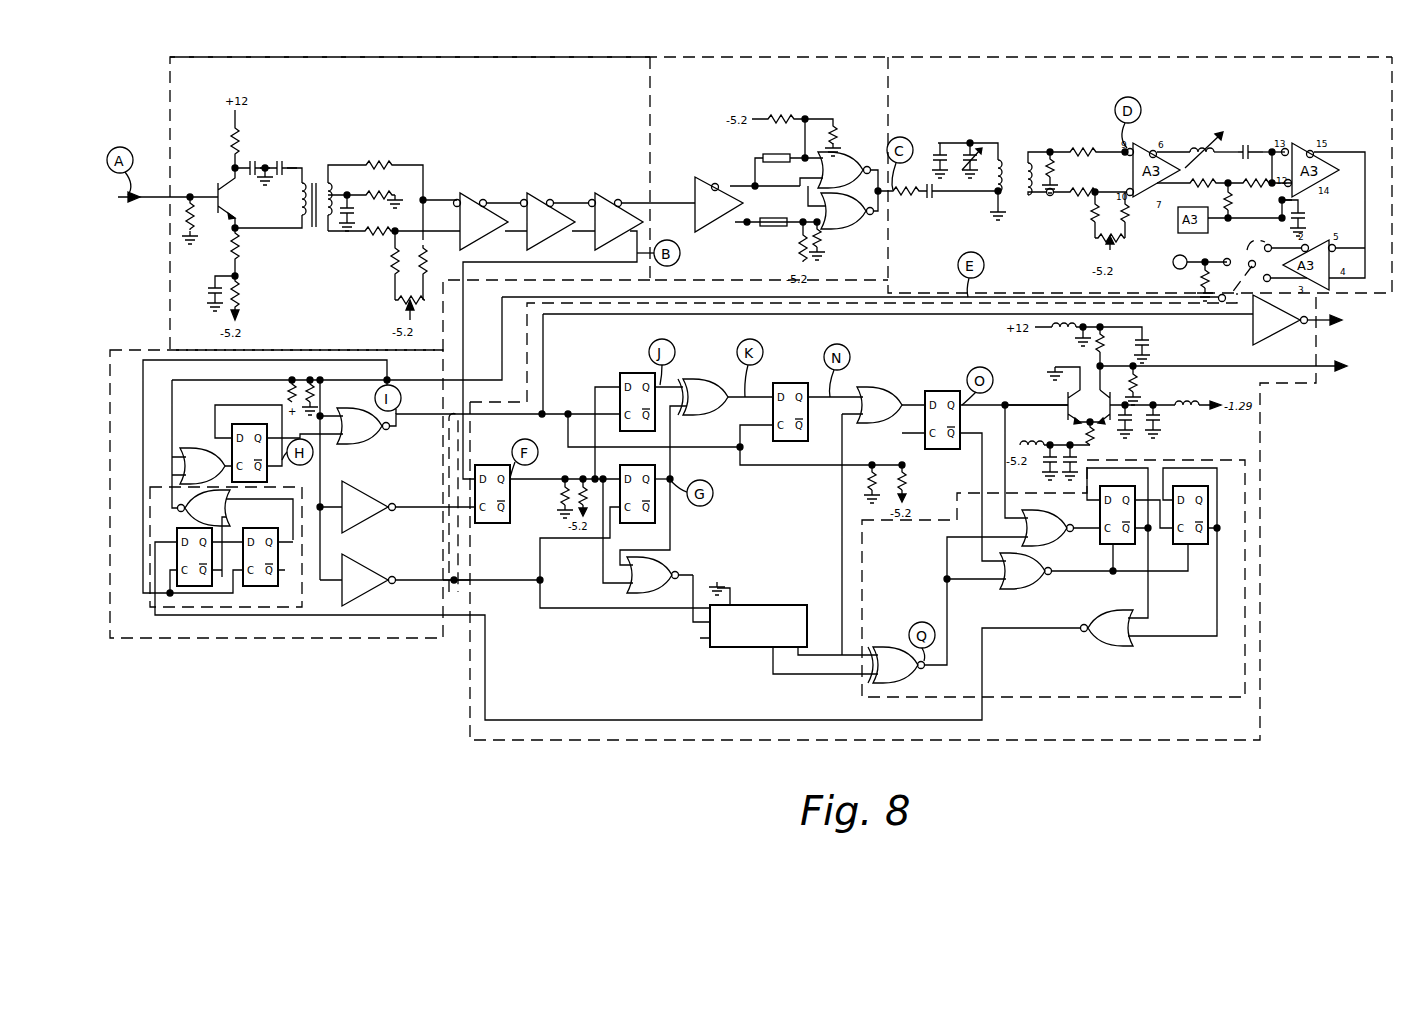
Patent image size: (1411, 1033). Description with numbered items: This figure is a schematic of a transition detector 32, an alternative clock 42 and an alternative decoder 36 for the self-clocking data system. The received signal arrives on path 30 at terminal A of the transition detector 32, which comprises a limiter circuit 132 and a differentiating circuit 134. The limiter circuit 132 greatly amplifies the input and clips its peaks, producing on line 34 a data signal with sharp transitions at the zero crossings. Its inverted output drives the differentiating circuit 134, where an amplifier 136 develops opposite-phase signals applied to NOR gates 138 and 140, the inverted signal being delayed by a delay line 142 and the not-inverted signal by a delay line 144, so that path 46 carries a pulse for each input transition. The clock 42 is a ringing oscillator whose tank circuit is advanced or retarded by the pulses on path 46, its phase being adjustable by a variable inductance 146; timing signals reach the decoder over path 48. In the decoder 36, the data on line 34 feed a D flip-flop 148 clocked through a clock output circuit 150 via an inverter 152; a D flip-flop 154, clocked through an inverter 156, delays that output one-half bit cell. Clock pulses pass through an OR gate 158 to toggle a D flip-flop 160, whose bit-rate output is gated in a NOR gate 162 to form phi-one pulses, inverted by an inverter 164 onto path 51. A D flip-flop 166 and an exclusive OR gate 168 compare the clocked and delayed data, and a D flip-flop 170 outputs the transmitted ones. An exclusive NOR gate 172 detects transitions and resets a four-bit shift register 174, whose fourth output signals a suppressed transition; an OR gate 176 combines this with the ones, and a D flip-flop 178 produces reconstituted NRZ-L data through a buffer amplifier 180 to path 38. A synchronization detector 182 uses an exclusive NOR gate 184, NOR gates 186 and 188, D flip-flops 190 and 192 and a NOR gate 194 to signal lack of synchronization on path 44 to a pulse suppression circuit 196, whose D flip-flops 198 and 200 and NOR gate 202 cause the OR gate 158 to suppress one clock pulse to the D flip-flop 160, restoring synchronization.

The path 30 is at (152, 200).
The transition detector 32 is at (656, 55).
The line 34 is at (466, 303).
The decoder 36 is at (470, 697).
The path 38 is at (1320, 370).
The clock 42 is at (1252, 60).
The path 44 is at (452, 625).
The path 46 is at (893, 194).
The path 48 is at (456, 597).
The path 51 is at (1326, 320).
The limiter circuit 132 is at (568, 124).
The differentiating circuit 134 is at (712, 97).
The amplifier 136 is at (705, 178).
The NOR gate 138 is at (857, 155).
The NOR gate 140 is at (850, 229).
The delay line 142 is at (772, 154).
The delay line 144 is at (768, 226).
The variable inductance 146 is at (1203, 142).
The D flip-flop 148 is at (490, 523).
The clock output circuit 150 is at (163, 640).
The inverter 152 is at (370, 495).
The D flip-flop 154 is at (652, 523).
The inverter 156 is at (365, 570).
The OR gate 158 is at (200, 448).
The D flip-flop 160 is at (245, 424).
The NOR gate 162 is at (345, 442).
The inverter 164 is at (1268, 335).
The D flip-flop 166 is at (628, 373).
The exclusive OR gate 168 is at (700, 380).
The D flip-flop 170 is at (793, 383).
The exclusive NOR gate 172 is at (645, 593).
The shift register 174 is at (776, 605).
The OR gate 176 is at (868, 388).
The D flip-flop 178 is at (945, 391).
The buffer amplifier 180 is at (1050, 400).
The synchronization detector 182 is at (915, 571).
The exclusive NOR gate 184 is at (896, 650).
The NOR gate 186 is at (1036, 588).
The NOR gate 188 is at (1066, 540).
The D flip-flop 190 is at (1140, 560).
The D flip-flop 192 is at (1217, 528).
The NOR gate 194 is at (1106, 612).
The pulse suppression circuit 196 is at (198, 608).
The D flip-flop 198 is at (184, 528).
The D flip-flop 200 is at (285, 572).
The NOR gate 202 is at (244, 500).